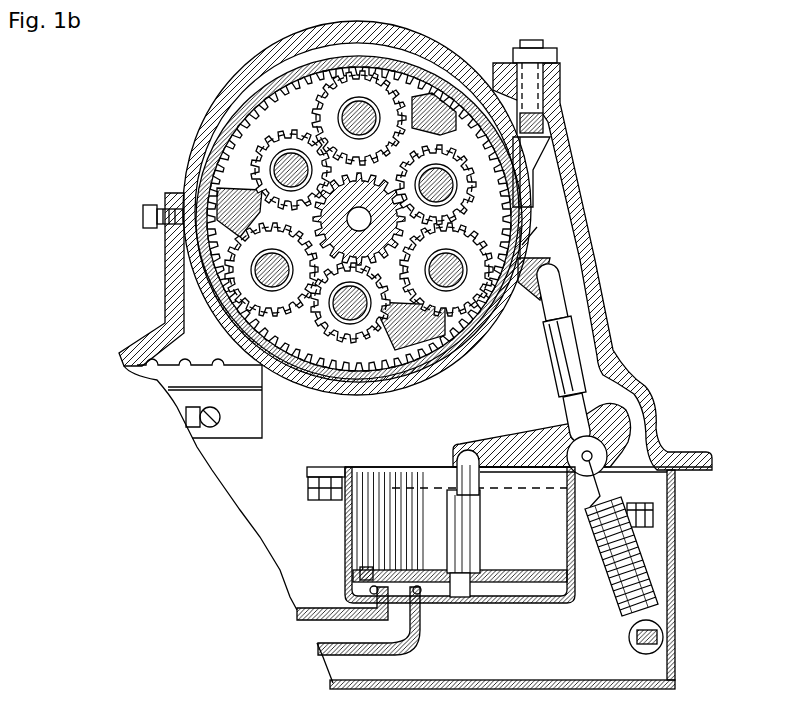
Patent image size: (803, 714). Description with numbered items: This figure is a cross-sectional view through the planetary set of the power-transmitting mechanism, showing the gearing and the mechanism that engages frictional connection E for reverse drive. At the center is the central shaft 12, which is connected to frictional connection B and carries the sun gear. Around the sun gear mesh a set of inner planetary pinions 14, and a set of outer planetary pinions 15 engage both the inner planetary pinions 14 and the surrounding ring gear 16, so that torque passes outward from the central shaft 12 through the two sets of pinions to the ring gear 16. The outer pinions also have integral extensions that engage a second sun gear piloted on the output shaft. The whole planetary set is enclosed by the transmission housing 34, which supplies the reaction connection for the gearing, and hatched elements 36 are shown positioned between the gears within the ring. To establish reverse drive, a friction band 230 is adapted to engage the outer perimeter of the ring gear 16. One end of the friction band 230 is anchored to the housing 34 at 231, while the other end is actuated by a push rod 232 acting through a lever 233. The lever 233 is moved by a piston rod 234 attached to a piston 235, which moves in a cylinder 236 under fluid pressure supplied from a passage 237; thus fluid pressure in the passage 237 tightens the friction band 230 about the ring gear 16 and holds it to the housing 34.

The central shaft 12 is at (340, 232).
The inner planetary pinions 14 is at (280, 133).
The outer planetary pinions 15 is at (373, 85).
The ring gear 16 is at (322, 63).
The friction band 230 is at (348, 67).
The transmission housing 34 is at (460, 57).
The guide blocks 36 is at (427, 113).
The anchor 231 is at (543, 133).
The push rod 232 is at (580, 377).
The lever 233 is at (523, 438).
The piston rod 234 is at (472, 530).
The piston 235 is at (520, 565).
The cylinder 236 is at (568, 550).
The passage 237 is at (388, 628).